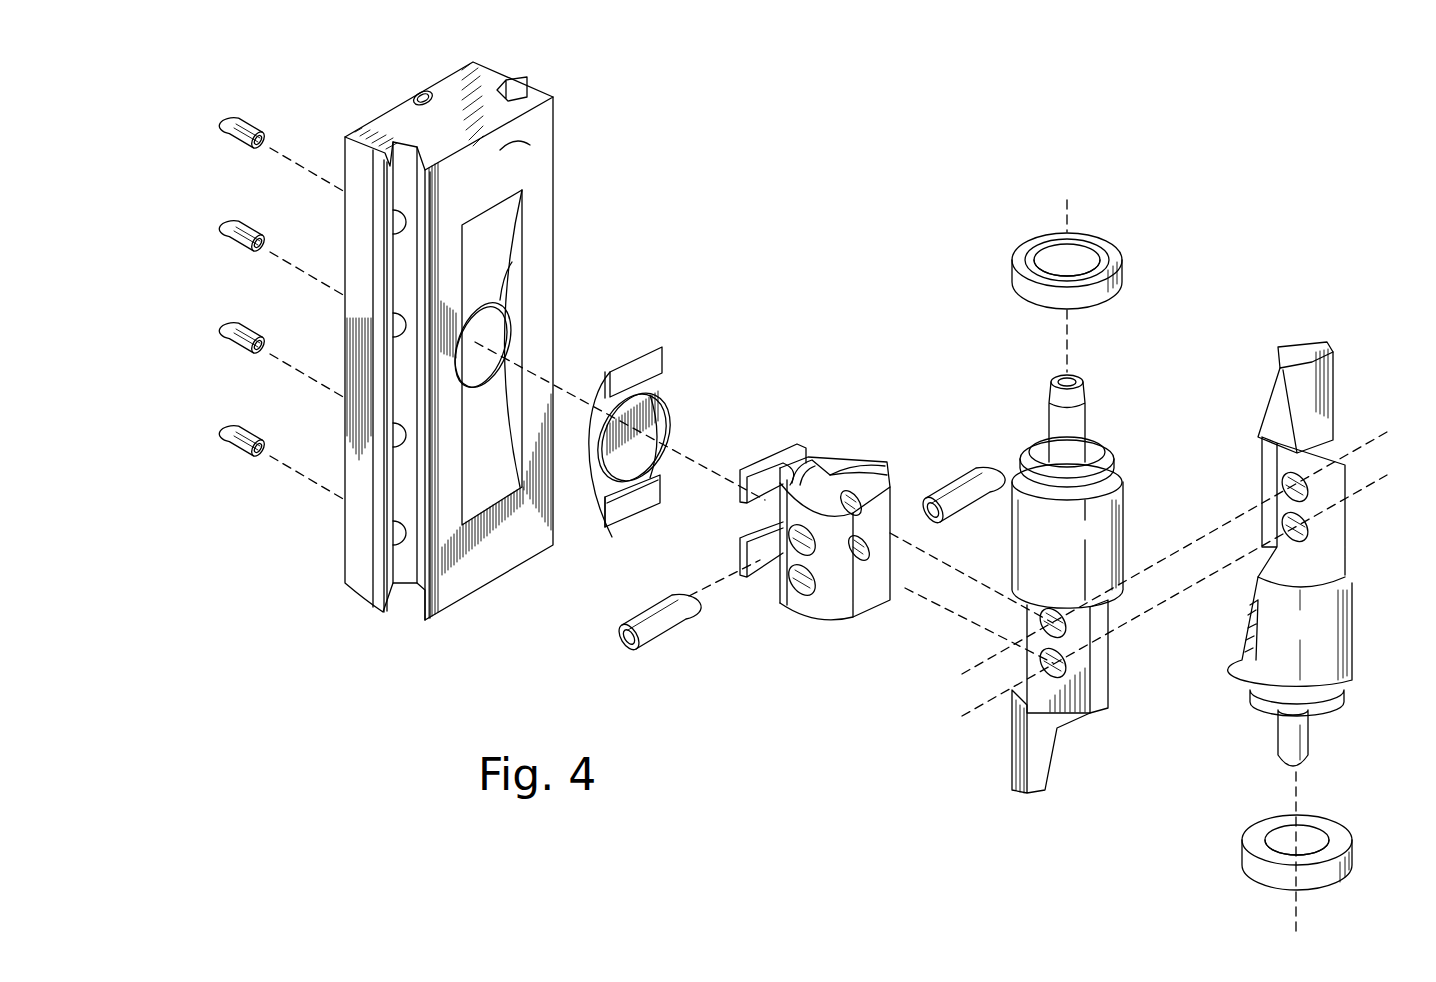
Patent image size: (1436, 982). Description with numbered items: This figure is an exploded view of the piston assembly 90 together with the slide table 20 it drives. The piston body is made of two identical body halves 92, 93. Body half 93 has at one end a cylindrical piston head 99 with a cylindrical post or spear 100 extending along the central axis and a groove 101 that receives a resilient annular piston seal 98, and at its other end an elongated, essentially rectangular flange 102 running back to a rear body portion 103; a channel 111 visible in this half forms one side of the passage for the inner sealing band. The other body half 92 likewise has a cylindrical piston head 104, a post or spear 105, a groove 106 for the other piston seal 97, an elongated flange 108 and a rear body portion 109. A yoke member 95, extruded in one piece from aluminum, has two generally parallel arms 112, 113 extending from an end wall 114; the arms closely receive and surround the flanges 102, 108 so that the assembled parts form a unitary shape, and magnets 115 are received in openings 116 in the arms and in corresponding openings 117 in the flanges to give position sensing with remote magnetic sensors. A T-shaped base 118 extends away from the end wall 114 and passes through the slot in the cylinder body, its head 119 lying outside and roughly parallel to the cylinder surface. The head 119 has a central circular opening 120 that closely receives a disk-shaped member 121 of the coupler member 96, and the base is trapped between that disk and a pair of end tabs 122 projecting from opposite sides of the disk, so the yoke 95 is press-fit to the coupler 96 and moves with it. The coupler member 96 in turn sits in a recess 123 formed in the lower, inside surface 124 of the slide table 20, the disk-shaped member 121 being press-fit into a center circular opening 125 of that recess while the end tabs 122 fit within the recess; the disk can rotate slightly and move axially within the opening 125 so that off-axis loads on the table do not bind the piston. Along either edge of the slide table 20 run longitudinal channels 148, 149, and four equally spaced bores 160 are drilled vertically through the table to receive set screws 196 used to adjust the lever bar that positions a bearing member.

The slide table 20 is at (408, 103).
The channel 148 is at (517, 88).
The channel 149 is at (390, 112).
The lower inside surface 124 is at (502, 147).
The recess 123 is at (505, 245).
The circular opening 125 is at (513, 335).
The coupler member 96 is at (676, 424).
The end tabs 122 is at (627, 368).
The disk-shaped member 121 is at (653, 413).
The head 119 is at (790, 445).
The yoke member 95 is at (824, 520).
The end wall 114 is at (812, 475).
The T-shaped base 118 is at (732, 468).
The arm 112 is at (864, 475).
The magnets 115 is at (983, 470).
The openings 116 is at (880, 530).
The central circular opening 120 is at (755, 529).
The arm 113 is at (832, 606).
The bores 160 is at (393, 234).
The set screws 196 is at (228, 438).
The piston seal 97 is at (1025, 257).
The piston assembly 90 is at (1107, 200).
The cylindrical post or spear 105 is at (1079, 418).
The groove 106 is at (1093, 480).
The cylindrical piston head 104 is at (1105, 520).
The channel 111 is at (1316, 610).
The rear body portion 103 is at (1322, 402).
The openings 117 is at (1060, 660).
The flange 102 is at (1318, 555).
The body half 93 is at (1335, 607).
The cylindrical piston head 99 is at (1332, 656).
The groove 101 is at (1322, 692).
The cylindrical post or spear 100 is at (1305, 740).
The piston seal 98 is at (1258, 830).
The body half 92 is at (1063, 573).
The flange 108 is at (1077, 690).
The rear body portion 109 is at (1020, 760).